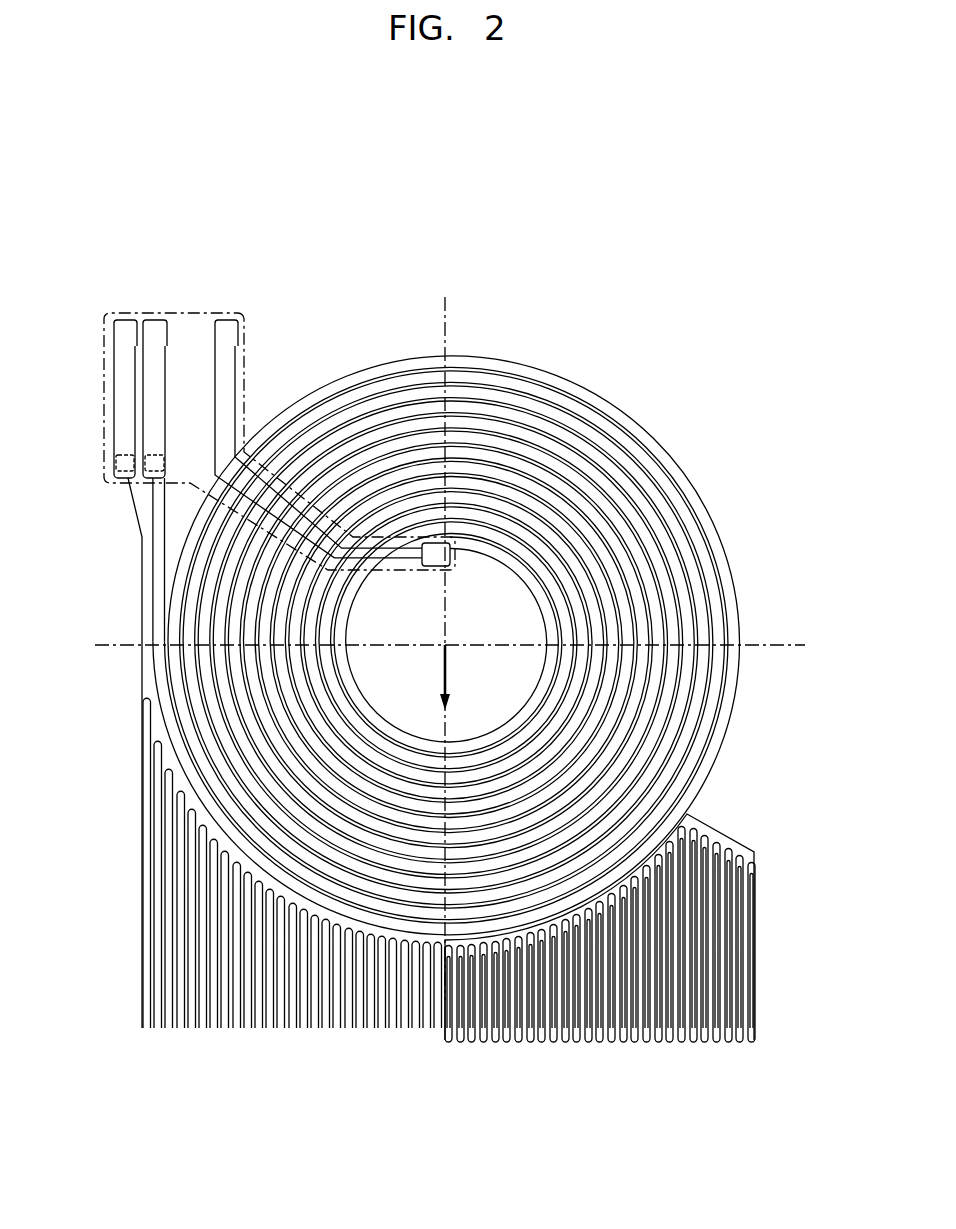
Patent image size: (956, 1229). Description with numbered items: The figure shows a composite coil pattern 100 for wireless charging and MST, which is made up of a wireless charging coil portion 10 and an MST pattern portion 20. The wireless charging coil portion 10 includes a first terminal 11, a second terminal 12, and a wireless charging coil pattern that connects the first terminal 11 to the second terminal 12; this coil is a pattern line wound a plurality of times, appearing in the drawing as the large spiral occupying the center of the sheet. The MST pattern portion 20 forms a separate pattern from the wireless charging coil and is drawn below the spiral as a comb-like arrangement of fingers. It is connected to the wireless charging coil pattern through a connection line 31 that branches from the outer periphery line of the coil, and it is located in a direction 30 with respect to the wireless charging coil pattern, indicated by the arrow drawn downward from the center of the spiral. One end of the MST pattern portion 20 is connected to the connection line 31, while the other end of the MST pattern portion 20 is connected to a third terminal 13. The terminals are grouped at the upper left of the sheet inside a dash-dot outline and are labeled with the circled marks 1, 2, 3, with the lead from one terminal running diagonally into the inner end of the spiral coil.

The composite coil pattern 100 is at (780, 297).
The wireless charging coil portion 10 is at (592, 372).
The first terminal 11 is at (437, 546).
The second terminal 12 is at (137, 450).
The third terminal 13 is at (121, 462).
The MST pattern portion 20 is at (772, 935).
The direction 30 is at (450, 673).
The connection line 31 is at (735, 836).
The first terminal 1 is at (128, 657).
The second terminal 2 is at (155, 464).
The third terminal 3 is at (319, 422).